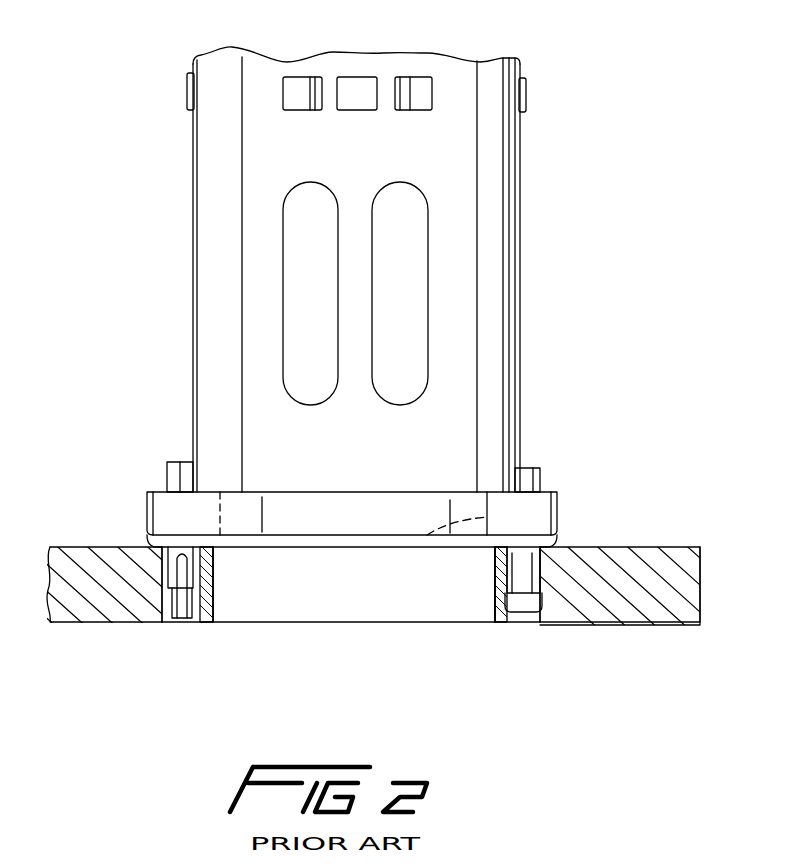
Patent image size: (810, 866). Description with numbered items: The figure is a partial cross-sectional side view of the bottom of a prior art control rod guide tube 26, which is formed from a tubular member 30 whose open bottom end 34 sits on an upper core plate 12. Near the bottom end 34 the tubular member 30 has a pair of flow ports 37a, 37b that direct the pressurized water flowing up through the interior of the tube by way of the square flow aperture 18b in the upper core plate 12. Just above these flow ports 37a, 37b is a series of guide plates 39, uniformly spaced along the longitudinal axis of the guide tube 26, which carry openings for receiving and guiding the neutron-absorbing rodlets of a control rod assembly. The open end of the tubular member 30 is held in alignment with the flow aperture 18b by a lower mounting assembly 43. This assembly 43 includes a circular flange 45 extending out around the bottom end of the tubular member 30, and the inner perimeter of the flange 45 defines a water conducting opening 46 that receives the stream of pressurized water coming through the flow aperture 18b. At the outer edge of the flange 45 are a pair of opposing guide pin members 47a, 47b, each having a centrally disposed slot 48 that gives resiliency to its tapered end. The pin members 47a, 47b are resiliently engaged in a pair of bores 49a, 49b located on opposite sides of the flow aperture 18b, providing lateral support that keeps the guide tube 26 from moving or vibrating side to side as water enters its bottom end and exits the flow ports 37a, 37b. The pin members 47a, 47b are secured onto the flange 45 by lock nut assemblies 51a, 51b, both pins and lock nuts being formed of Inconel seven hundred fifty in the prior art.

The control rod guide tube 26 is at (112, 227).
The tubular member 30 is at (519, 240).
The guide plates 39 is at (421, 104).
The flow port 37a is at (287, 310).
The flow port 37b is at (418, 310).
The lock nut assembly 51a is at (168, 470).
The lock nut assembly 51b is at (527, 480).
The lower mounting assembly 43 is at (138, 527).
The circular flange 45 is at (418, 510).
The water conducting opening 46 is at (433, 546).
The bottom end 34 is at (250, 540).
The upper core plate 12 is at (680, 608).
The slot 48 is at (170, 600).
The guide pin member 47a is at (172, 618).
The guide pin member 47b is at (528, 612).
The bore 49a is at (202, 610).
The bore 49b is at (510, 627).
The flow aperture 18b is at (497, 597).